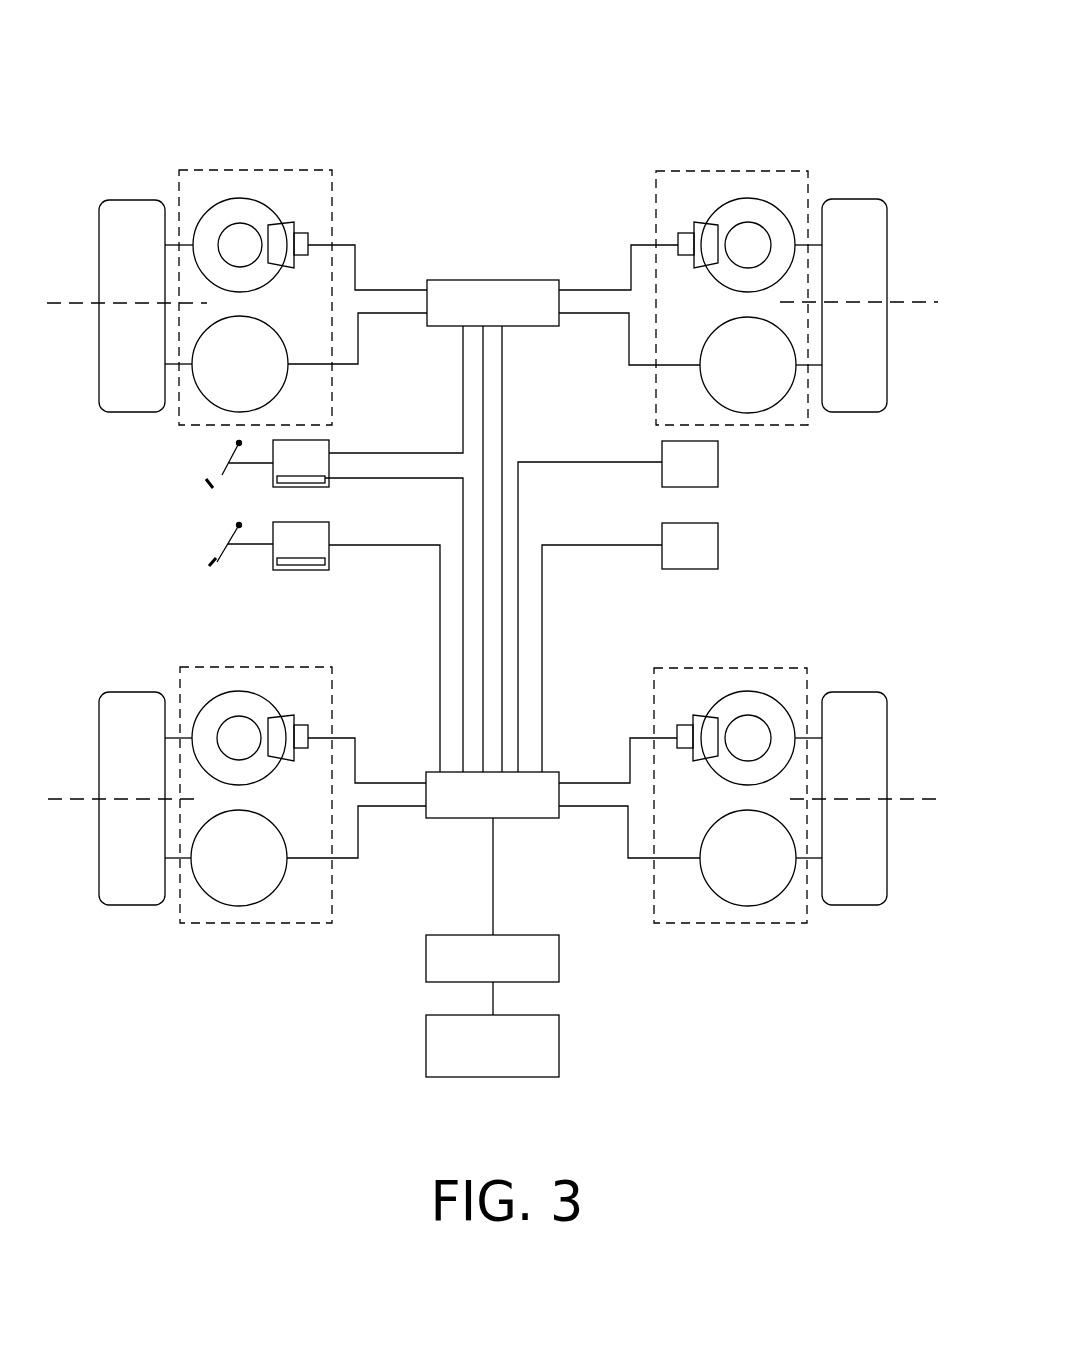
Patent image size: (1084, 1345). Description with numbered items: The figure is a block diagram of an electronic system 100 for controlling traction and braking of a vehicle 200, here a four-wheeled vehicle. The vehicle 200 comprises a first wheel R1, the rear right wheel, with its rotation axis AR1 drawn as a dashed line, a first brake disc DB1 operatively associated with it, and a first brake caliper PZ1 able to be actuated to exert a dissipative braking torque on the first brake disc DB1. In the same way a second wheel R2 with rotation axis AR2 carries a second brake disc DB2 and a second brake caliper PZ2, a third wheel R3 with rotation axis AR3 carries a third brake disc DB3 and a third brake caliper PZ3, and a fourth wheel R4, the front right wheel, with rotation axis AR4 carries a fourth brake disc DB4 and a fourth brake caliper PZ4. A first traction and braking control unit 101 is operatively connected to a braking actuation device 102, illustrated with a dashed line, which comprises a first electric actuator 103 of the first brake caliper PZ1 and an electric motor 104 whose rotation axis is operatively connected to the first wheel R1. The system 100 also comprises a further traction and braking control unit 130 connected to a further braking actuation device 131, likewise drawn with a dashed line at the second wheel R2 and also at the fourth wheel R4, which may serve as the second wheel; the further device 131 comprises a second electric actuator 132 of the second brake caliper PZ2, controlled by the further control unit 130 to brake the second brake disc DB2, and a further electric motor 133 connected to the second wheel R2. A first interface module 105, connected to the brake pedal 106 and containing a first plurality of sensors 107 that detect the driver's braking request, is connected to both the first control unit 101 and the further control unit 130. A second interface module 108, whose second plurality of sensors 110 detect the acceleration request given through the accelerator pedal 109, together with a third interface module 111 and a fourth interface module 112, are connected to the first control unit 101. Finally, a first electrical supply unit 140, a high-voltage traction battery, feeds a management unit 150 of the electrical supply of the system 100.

The electronic system for controlling traction and braking 100 is at (618, 988).
The first traction and braking control unit 101 is at (470, 806).
The braking actuation device 102 is at (205, 912).
The first electric actuator 103 is at (307, 730).
The electric motor 104 is at (216, 872).
The first interface module 105 is at (318, 451).
The brake pedal 106 is at (208, 482).
The first plurality of sensors 107 is at (327, 480).
The second interface module 108 is at (288, 522).
The accelerator pedal 109 is at (210, 563).
The second plurality of sensors 110 is at (328, 563).
The third interface module 111 is at (707, 557).
The fourth interface module 112 is at (708, 467).
The further traction and braking control unit 130 is at (468, 316).
The further braking actuation device 131 is at (215, 187).
The second electric actuator 132 is at (303, 237).
The further electric motor 133 is at (219, 378).
The first electrical supply unit 140 is at (470, 1060).
The management unit 150 is at (470, 972).
The vehicle 200 is at (613, 107).
The first wheel R1 is at (122, 895).
The second wheel R2 is at (137, 217).
The third wheel R3 is at (858, 883).
The fourth wheel R4 is at (853, 400).
The rotation axis AR1 is at (72, 797).
The rotation axis AR2 is at (73, 307).
The rotation axis AR3 is at (905, 797).
The rotation axis AR4 is at (922, 300).
The first brake disc DB1 is at (232, 700).
The second brake disc DB2 is at (253, 218).
The third brake disc DB3 is at (752, 705).
The fourth brake disc DB4 is at (762, 212).
The first brake caliper PZ1 is at (280, 730).
The second brake caliper PZ2 is at (280, 233).
The third brake caliper PZ3 is at (698, 723).
The fourth brake caliper PZ4 is at (708, 230).